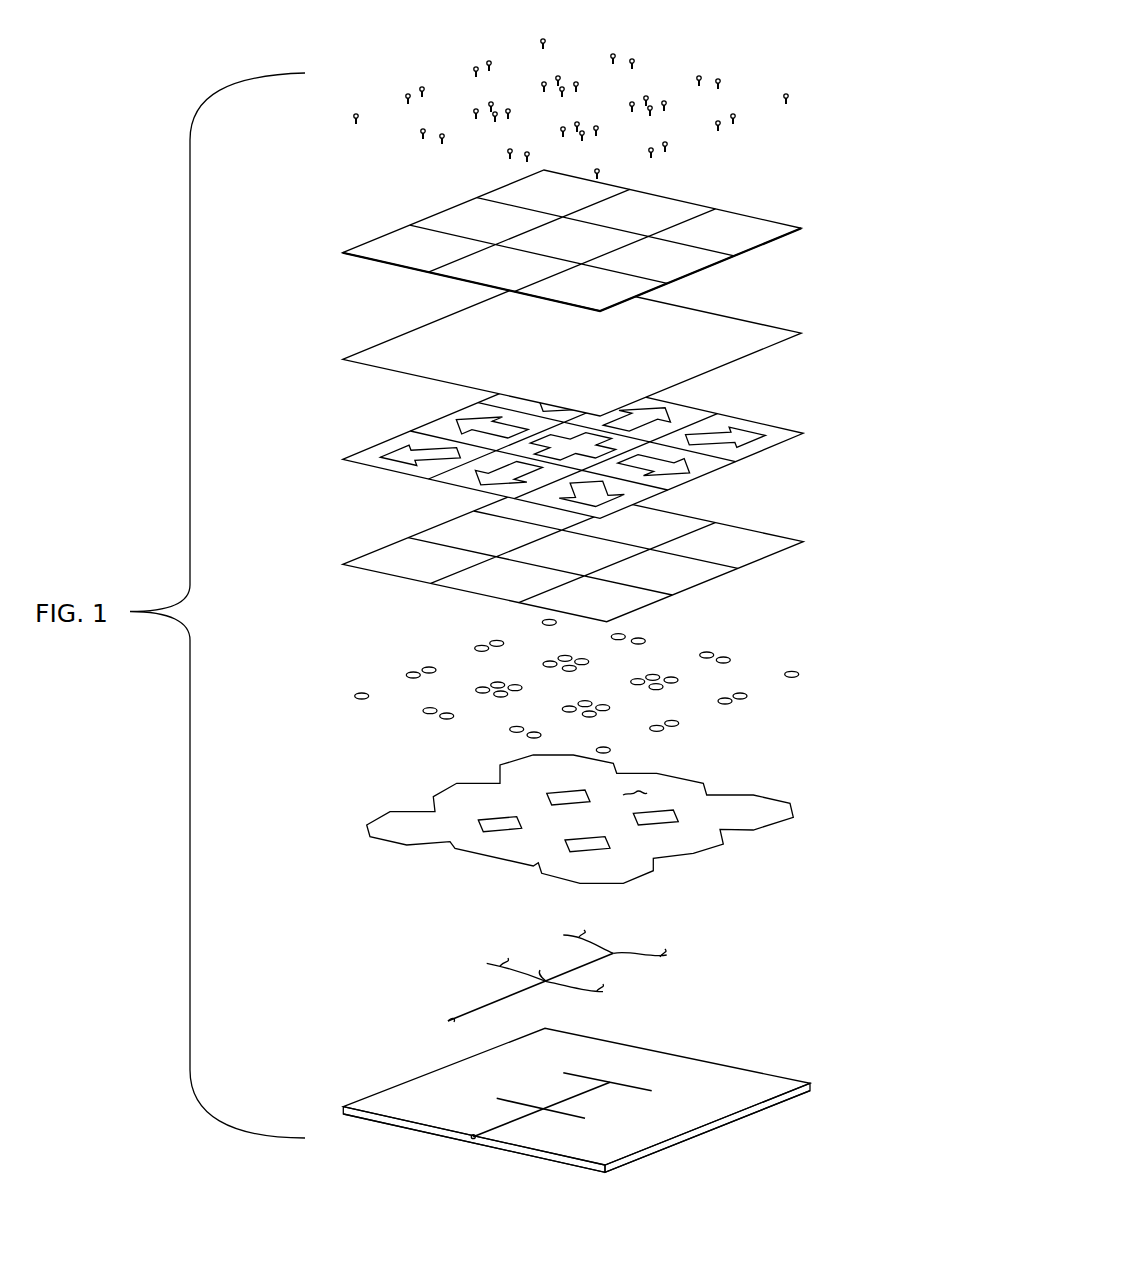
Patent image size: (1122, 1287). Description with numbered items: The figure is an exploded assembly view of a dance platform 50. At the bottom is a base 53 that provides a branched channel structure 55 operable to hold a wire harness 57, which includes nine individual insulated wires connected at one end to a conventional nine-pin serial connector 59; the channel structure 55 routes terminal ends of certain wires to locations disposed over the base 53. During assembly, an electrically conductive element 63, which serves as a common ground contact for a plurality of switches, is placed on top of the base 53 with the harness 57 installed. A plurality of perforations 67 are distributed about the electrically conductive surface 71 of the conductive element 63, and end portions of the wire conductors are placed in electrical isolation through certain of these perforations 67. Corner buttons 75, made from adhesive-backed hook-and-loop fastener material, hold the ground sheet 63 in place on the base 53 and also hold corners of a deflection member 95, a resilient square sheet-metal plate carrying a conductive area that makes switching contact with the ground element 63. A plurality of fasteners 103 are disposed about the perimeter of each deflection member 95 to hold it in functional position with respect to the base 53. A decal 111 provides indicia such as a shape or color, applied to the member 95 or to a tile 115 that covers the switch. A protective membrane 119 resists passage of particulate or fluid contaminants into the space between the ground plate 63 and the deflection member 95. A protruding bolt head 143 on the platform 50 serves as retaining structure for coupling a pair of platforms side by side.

The dance platform 50 is at (190, 955).
The base 53 is at (740, 1085).
The channel structure 55 is at (625, 1083).
The wire harness 57 is at (560, 992).
The 9-pin serial connector 59 is at (443, 1024).
The electrically conductive element 63 is at (758, 808).
The perforations 67 is at (527, 872).
The electrically conductive surface 71 is at (633, 793).
The corner buttons 75 is at (714, 655).
The deflection member 95 is at (683, 522).
The fasteners 103 is at (650, 27).
The decal 111 is at (680, 422).
The tile 115 is at (657, 216).
The protective membrane 119 is at (733, 342).
The bolt head 143 is at (670, 1147).